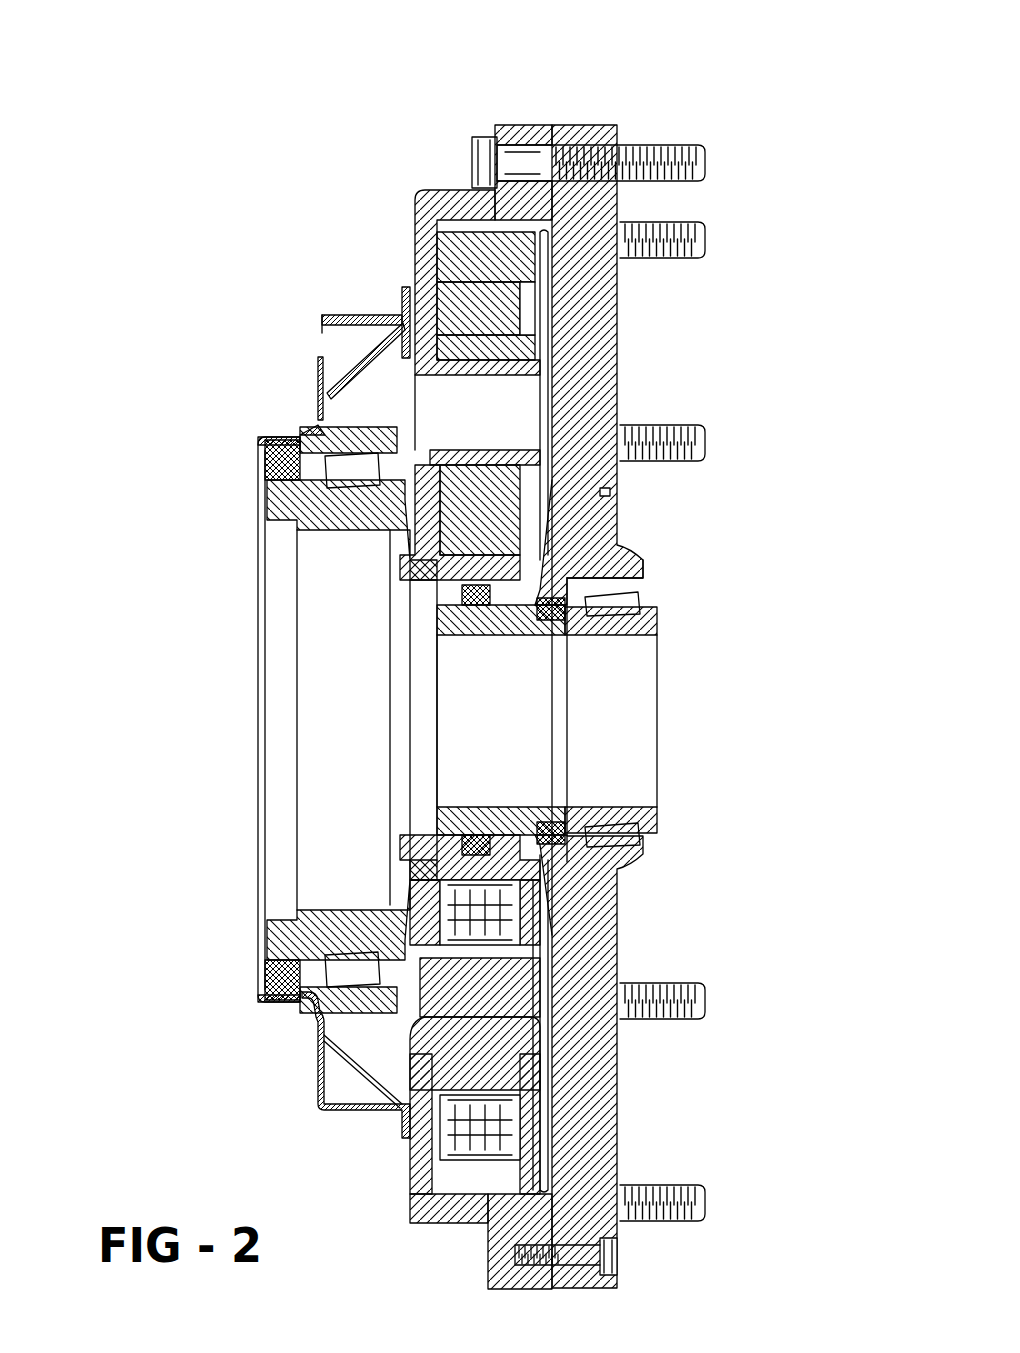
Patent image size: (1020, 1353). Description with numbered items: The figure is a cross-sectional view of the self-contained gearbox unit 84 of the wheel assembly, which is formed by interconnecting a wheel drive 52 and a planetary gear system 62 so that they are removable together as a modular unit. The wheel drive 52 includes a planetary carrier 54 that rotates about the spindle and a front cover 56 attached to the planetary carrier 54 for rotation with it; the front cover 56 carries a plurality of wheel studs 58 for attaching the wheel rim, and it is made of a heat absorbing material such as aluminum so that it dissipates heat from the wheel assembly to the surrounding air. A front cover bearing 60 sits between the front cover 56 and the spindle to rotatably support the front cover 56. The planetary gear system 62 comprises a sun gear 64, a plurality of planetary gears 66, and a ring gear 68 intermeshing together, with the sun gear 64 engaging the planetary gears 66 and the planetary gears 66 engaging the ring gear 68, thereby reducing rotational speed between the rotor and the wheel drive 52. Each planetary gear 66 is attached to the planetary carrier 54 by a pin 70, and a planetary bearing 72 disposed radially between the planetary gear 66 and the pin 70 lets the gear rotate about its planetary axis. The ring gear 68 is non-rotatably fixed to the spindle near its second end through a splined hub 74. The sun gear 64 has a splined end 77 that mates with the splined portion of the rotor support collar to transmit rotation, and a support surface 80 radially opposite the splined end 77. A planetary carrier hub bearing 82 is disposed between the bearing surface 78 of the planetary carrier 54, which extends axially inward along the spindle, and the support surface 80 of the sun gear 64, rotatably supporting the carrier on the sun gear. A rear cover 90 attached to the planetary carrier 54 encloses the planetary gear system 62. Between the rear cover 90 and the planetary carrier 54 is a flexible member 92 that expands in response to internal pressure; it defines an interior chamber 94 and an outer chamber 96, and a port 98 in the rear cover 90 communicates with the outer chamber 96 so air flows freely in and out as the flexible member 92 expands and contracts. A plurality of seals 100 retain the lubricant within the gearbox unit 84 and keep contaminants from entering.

The wheel drive 52 is at (626, 906).
The planetary carrier 54 is at (424, 192).
The front cover 56 is at (580, 315).
The wheel studs 58 is at (650, 1187).
The front cover bearing 60 is at (648, 582).
The planetary gear system 62 is at (540, 268).
The sun gear 64 is at (318, 548).
The planetary gears 66 is at (552, 298).
The ring gear 68 is at (568, 357).
The pin 70 is at (568, 405).
The planetary bearing 72 is at (610, 492).
The splined hub 74 is at (545, 640).
The splined end 77 is at (318, 560).
The bearing surface 78 is at (305, 438).
The support surface 80 is at (262, 490).
The planetary carrier hub bearing 82 is at (328, 425).
The gearbox unit 84 is at (730, 55).
The rear cover 90 is at (374, 318).
The flexible member 92 is at (352, 318).
The interior chamber 94 is at (344, 386).
The outer chamber 96 is at (322, 315).
The port 98 is at (345, 358).
The seals 100 is at (268, 458).